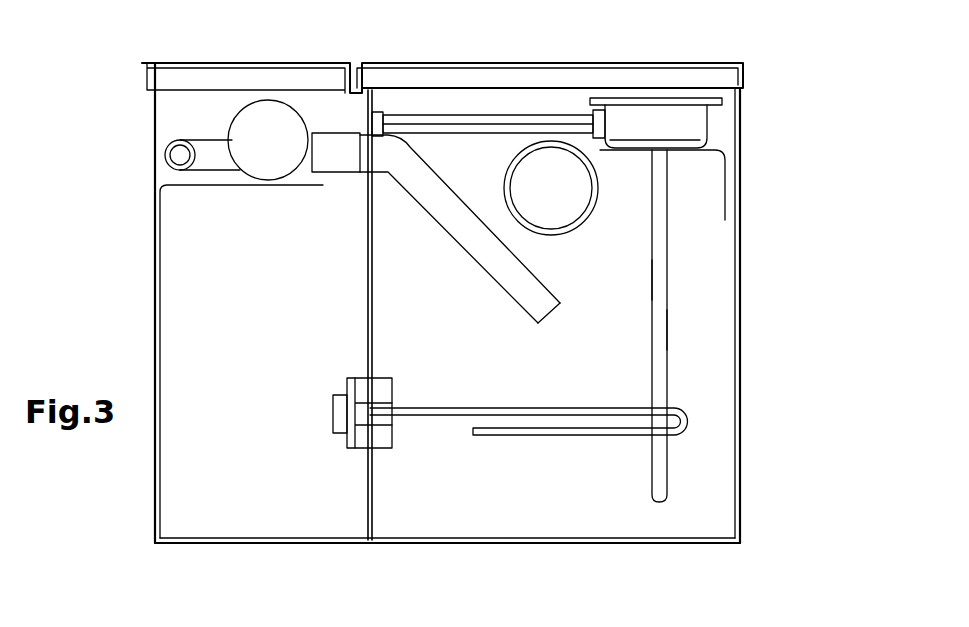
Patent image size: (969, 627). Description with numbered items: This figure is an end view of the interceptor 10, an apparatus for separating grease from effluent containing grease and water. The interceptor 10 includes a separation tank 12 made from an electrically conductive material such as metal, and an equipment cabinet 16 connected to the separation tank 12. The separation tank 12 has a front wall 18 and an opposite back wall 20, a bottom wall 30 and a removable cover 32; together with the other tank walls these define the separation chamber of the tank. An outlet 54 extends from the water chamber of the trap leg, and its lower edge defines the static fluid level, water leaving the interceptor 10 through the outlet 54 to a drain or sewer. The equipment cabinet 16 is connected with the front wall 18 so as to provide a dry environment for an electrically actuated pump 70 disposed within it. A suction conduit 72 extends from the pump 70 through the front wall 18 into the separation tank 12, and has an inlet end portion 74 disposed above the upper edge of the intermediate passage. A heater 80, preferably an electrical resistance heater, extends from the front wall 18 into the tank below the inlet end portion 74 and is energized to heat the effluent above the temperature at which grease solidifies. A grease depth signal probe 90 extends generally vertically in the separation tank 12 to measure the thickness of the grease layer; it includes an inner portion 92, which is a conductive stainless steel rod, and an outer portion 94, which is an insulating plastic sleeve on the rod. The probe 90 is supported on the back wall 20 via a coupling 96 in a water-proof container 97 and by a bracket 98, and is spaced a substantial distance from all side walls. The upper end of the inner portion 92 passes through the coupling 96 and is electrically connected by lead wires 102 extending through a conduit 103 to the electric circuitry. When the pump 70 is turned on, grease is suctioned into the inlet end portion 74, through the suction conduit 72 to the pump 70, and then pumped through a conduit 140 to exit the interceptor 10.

The interceptor 10 is at (118, 324).
The separation tank 12 is at (455, 301).
The equipment cabinet 16 is at (148, 507).
The front wall 18 is at (373, 330).
The back wall 20 is at (740, 440).
The bottom wall 30 is at (472, 544).
The removable cover 32 is at (622, 60).
The outlet 54 is at (560, 230).
The pump 70 is at (268, 165).
The suction conduit 72 is at (460, 243).
The inlet end portion 74 is at (542, 312).
The heater 80 is at (483, 437).
The grease depth signal probe 90 is at (638, 308).
The inner portion 92 is at (657, 278).
The outer portion 94 is at (667, 332).
The coupling 96 is at (650, 142).
The water-proof container 97 is at (707, 122).
The bracket 98 is at (707, 152).
The lead wires 102 is at (450, 127).
The conduit 103 is at (517, 115).
The conduit 140 is at (205, 160).